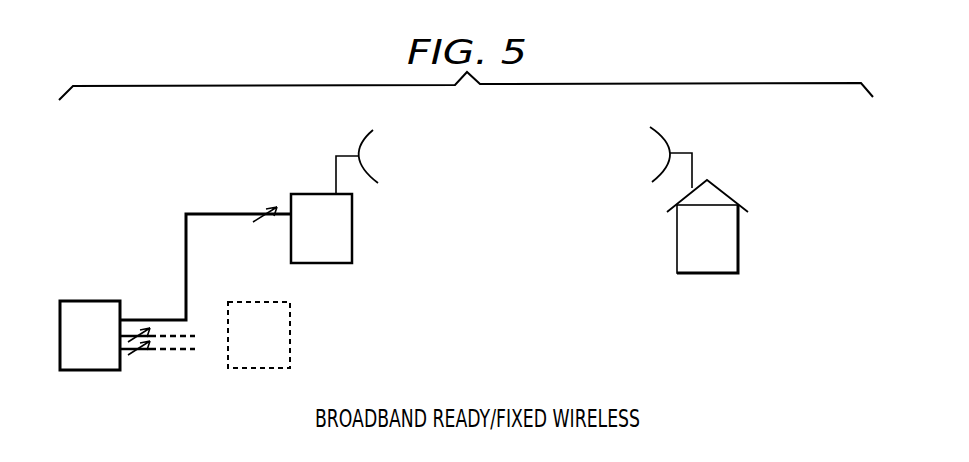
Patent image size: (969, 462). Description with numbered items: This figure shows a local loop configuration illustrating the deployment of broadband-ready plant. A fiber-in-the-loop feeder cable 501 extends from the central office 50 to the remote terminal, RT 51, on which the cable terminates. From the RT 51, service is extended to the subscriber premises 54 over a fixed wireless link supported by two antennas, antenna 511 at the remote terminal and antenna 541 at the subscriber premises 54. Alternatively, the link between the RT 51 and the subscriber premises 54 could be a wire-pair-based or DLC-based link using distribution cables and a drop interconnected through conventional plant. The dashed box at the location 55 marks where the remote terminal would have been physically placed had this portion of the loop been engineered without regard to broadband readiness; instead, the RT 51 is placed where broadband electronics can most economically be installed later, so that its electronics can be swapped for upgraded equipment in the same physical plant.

The central office 50 is at (83, 300).
The fiber-in-the-loop feeder cable 501 is at (184, 216).
The RT 51 is at (315, 194).
The antenna 511 is at (367, 142).
The subscriber premises 54 is at (728, 190).
The antenna 541 is at (655, 139).
The location 55 is at (290, 350).